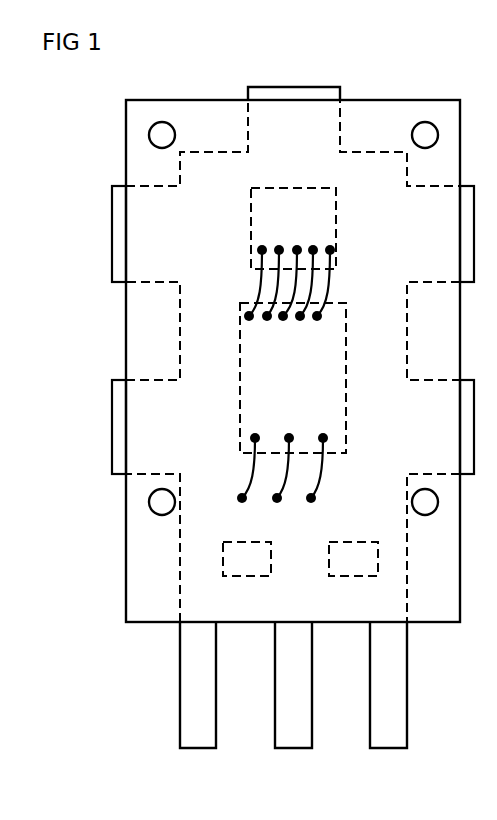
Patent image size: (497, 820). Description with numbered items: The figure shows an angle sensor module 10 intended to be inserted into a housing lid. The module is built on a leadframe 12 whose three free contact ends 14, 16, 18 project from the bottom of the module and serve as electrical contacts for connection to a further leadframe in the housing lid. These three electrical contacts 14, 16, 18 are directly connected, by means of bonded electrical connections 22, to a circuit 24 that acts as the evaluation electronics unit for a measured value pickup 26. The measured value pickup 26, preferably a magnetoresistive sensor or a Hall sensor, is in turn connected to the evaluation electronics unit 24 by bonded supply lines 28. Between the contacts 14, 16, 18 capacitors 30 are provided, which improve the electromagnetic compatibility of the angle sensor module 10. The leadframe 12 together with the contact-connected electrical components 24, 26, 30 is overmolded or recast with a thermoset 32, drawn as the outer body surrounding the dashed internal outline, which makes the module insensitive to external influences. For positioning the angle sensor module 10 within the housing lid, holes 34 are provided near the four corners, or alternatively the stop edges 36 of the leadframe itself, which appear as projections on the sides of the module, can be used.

The angle sensor module 10 is at (118, 137).
The leadframe 12 is at (180, 562).
The contact end 14 is at (389, 737).
The contact end 16 is at (202, 737).
The contact end 18 is at (297, 737).
The bonded electrical connections 22 is at (326, 468).
The circuit 24 is at (348, 410).
The measured value pickup 26 is at (338, 218).
The bonded supply lines 28 is at (332, 290).
The capacitors 30 is at (271, 558).
The thermoset 32 is at (383, 106).
The holes 34 is at (176, 135).
The stop edges 36 is at (112, 232).